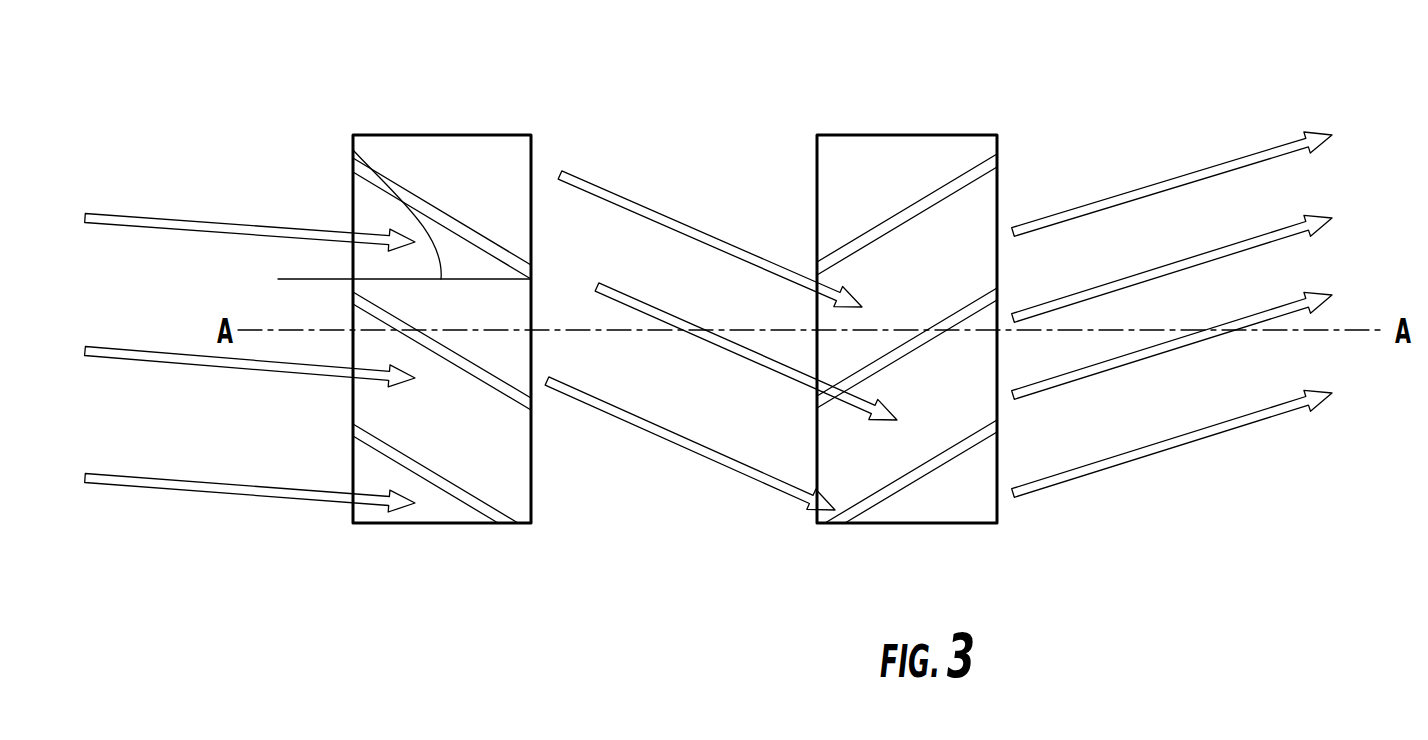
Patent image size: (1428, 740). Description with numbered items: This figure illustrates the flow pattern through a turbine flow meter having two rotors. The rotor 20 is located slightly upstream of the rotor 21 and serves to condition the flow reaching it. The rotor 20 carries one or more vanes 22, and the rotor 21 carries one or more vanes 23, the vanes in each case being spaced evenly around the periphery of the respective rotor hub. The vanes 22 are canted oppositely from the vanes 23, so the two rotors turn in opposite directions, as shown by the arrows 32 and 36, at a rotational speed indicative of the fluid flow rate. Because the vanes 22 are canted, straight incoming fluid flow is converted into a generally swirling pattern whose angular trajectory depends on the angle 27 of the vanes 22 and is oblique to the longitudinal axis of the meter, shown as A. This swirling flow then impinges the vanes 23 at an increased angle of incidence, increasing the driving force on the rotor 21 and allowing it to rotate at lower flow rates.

The rotor 20 is at (405, 135).
The rotor 21 is at (883, 135).
The vanes 22 is at (510, 383).
The vanes 23 is at (913, 476).
The angle 27 is at (353, 150).
The arrow 32 is at (428, 157).
The arrow 36 is at (955, 227).